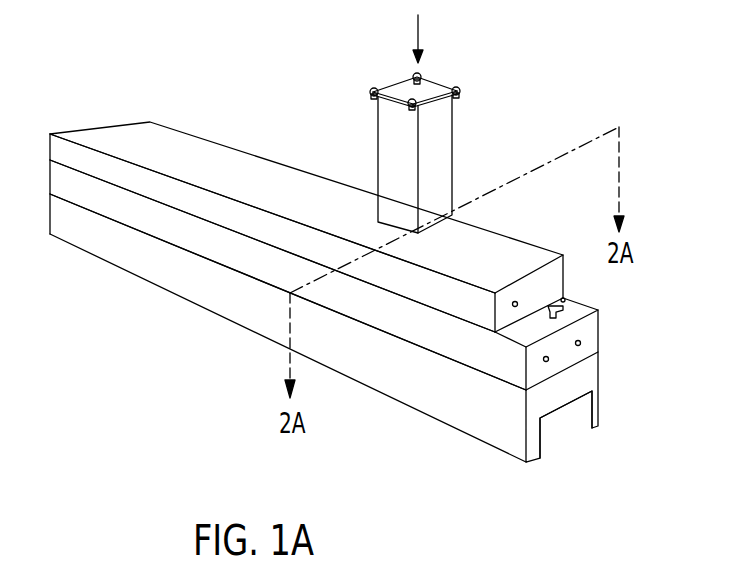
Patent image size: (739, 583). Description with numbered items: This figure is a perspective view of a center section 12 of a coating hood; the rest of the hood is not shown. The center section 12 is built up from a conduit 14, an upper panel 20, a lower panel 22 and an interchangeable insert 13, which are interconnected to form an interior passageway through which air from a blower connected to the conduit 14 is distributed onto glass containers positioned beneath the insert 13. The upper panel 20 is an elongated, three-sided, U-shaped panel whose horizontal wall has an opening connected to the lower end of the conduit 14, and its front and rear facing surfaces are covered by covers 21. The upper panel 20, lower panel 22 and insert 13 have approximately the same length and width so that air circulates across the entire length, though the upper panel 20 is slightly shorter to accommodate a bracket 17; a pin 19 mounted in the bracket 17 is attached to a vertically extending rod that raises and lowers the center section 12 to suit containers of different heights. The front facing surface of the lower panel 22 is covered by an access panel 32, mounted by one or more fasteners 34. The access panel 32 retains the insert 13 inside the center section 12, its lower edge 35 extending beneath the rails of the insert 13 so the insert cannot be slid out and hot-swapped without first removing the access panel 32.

The center section 12 is at (306, 205).
The interchangeable insert 13 is at (345, 357).
The conduit 14 is at (440, 160).
The bracket 17 is at (566, 306).
The pin 19 is at (563, 302).
The upper panel 20 is at (117, 170).
The covers 21 is at (514, 307).
The lower panel 22 is at (212, 235).
The access panel 32 is at (588, 337).
The fasteners 34 is at (578, 345).
The lower edge 35 is at (543, 382).